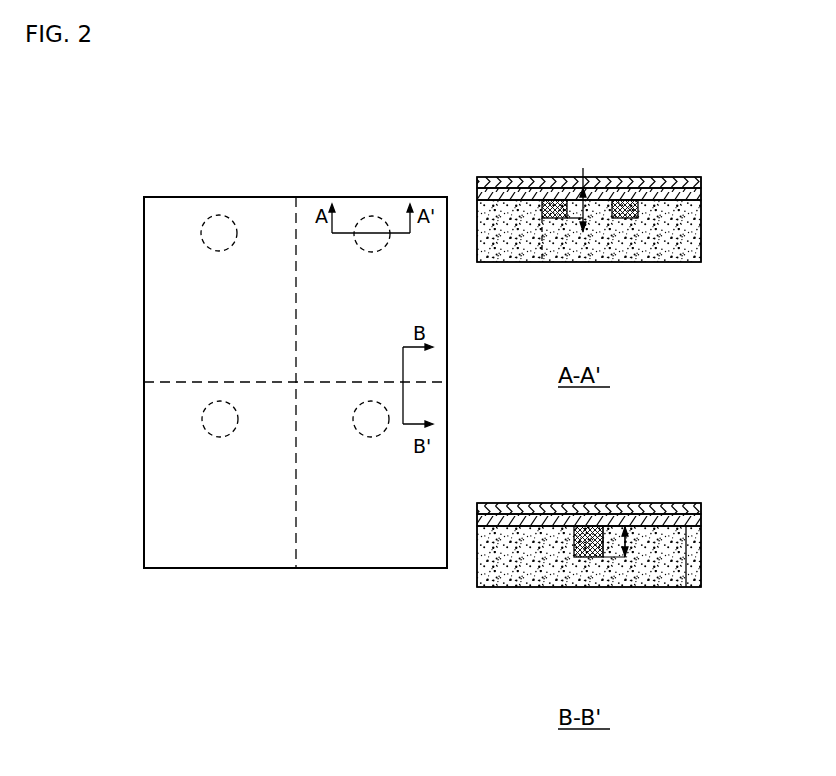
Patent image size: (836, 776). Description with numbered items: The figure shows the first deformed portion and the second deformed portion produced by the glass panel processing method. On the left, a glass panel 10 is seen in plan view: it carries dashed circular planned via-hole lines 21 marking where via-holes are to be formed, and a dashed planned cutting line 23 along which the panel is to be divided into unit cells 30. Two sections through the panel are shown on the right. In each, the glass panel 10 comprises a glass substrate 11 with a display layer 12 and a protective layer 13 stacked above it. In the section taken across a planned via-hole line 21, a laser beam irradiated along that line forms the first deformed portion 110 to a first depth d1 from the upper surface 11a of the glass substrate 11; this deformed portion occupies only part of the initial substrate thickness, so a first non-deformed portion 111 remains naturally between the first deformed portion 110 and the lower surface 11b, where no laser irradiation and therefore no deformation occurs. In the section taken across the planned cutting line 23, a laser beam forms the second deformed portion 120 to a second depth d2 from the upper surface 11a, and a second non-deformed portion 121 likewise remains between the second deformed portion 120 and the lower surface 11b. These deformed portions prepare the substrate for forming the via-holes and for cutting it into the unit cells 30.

The glass panel 10 is at (188, 163).
The planned via-hole line 21 is at (231, 219).
The planned cutting line 23 is at (187, 382).
The unit cell 30 is at (224, 550).
The glass substrate 11 is at (522, 570).
The upper surface 11a is at (504, 200).
The lower surface 11b is at (510, 262).
The first deformed portion 110 is at (553, 200).
The first non-deformed portion 111 is at (555, 253).
The first depth d1 is at (587, 207).
The display layer 12 is at (690, 197).
The protective layer 13 is at (690, 182).
The second deformed portion 120 is at (593, 530).
The second non-deformed portion 121 is at (595, 573).
The second depth d2 is at (630, 537).